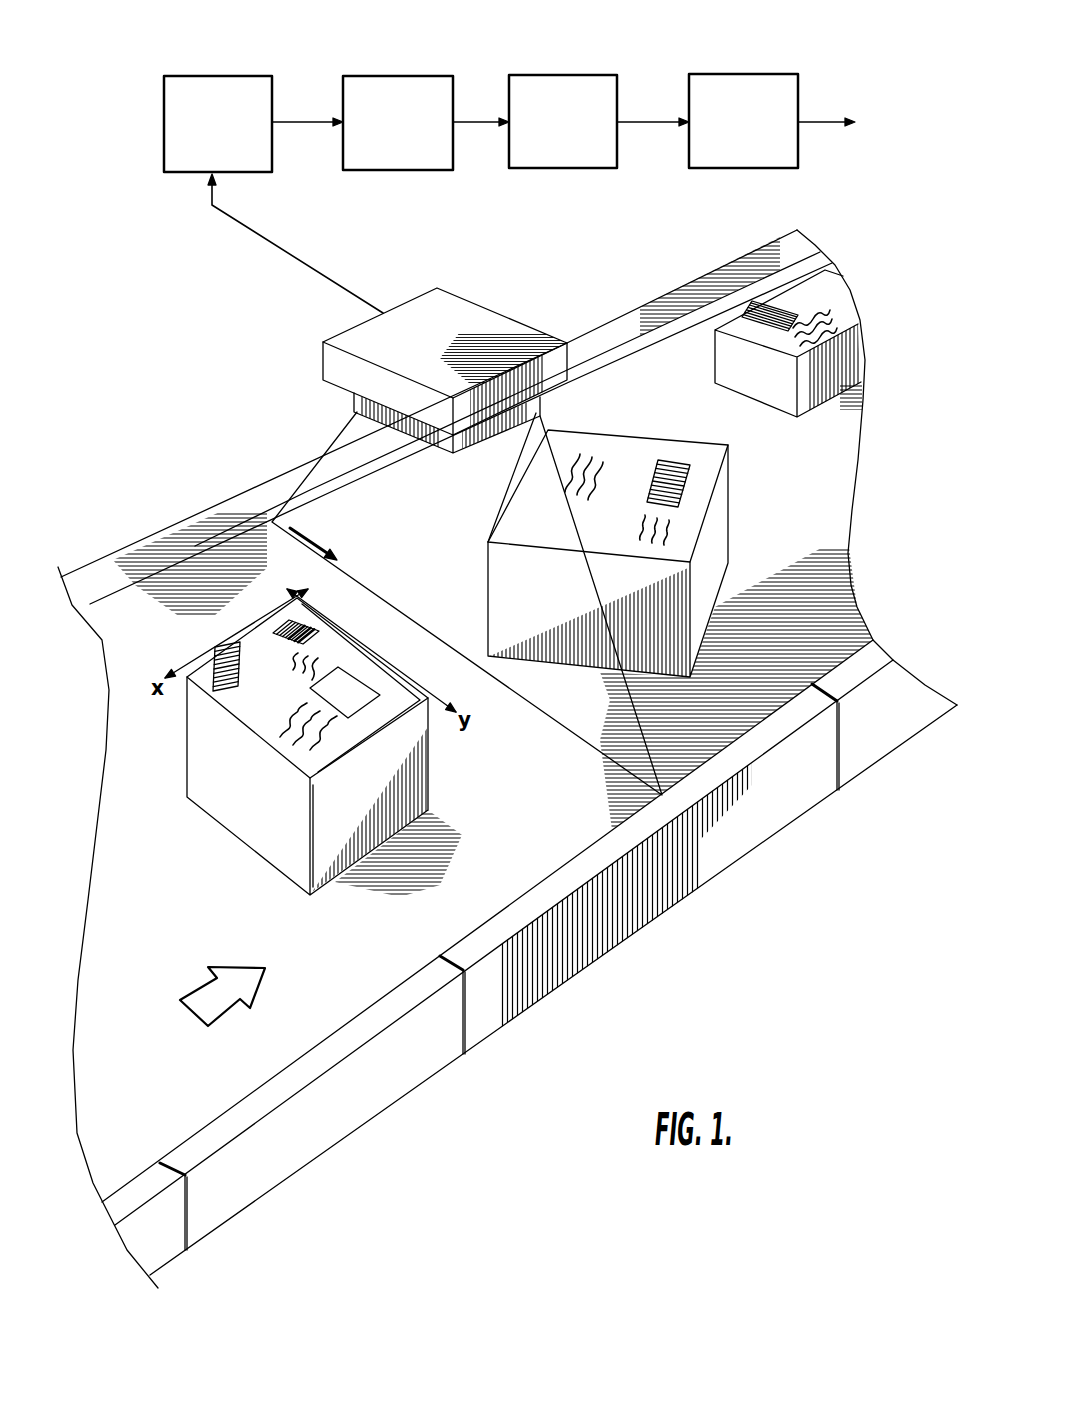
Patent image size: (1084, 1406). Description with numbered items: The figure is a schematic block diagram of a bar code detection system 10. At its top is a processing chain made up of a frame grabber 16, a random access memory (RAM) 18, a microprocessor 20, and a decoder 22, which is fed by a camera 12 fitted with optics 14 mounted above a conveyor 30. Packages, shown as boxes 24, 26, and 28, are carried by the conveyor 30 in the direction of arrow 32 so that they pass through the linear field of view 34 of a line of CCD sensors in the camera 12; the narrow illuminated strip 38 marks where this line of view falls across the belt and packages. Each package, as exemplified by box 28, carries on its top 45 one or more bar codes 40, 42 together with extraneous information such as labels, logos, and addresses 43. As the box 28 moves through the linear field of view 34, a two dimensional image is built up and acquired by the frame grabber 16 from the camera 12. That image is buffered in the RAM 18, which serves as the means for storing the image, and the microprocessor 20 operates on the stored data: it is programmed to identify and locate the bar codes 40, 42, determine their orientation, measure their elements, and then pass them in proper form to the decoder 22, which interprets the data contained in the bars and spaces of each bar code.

The bar code detection system 10 is at (792, 14).
The camera 12 is at (442, 300).
The optics 14 is at (354, 401).
The frame grabber 16 is at (226, 75).
The random access memory (RAM) 18 is at (388, 75).
The microprocessor 20 is at (552, 74).
The decoder 22 is at (775, 73).
The box 24 is at (826, 380).
The box 26 is at (710, 583).
The box 28 is at (300, 725).
The conveyor 30 is at (417, 930).
The arrow 32 is at (208, 995).
The linear field of view 34 is at (293, 557).
The scan line field of view 38 is at (320, 462).
The bar code 40 is at (278, 623).
The bar code 42 is at (224, 647).
The addresses 43 is at (267, 725).
The top 45 is at (300, 753).